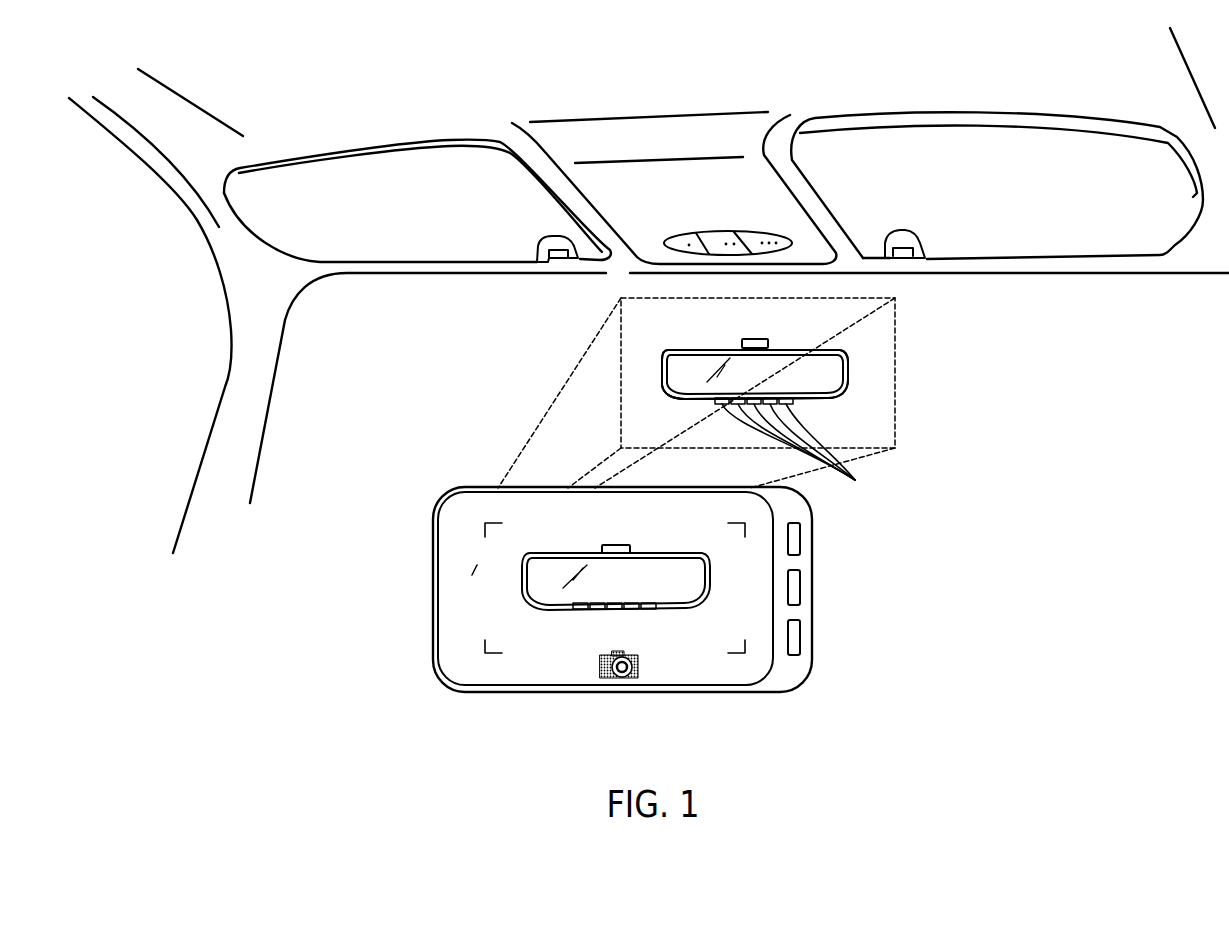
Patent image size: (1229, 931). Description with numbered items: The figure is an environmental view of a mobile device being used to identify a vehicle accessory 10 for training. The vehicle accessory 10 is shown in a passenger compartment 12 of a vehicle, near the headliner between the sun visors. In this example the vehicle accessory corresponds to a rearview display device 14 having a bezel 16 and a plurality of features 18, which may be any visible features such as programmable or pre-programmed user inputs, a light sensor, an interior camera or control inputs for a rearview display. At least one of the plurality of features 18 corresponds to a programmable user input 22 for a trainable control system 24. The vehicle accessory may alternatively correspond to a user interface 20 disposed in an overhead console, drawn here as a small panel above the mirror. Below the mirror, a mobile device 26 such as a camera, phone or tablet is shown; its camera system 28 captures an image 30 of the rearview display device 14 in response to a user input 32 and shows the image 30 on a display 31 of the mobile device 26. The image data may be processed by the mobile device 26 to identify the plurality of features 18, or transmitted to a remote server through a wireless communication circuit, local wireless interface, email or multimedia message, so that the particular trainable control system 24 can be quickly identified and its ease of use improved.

The vehicle accessory 10 is at (685, 217).
The passenger compartment 12 is at (298, 636).
The rearview display device 14 is at (812, 402).
The bezel 16 is at (665, 367).
The plurality of features 18 is at (805, 452).
The user interface 20 is at (733, 230).
The programmable user input 22 is at (713, 405).
The trainable control system 24 is at (652, 402).
The mobile device 26 is at (813, 602).
The camera system 28 is at (468, 620).
The image 30 is at (692, 628).
The display 31 is at (472, 550).
The user input 32 is at (603, 679).